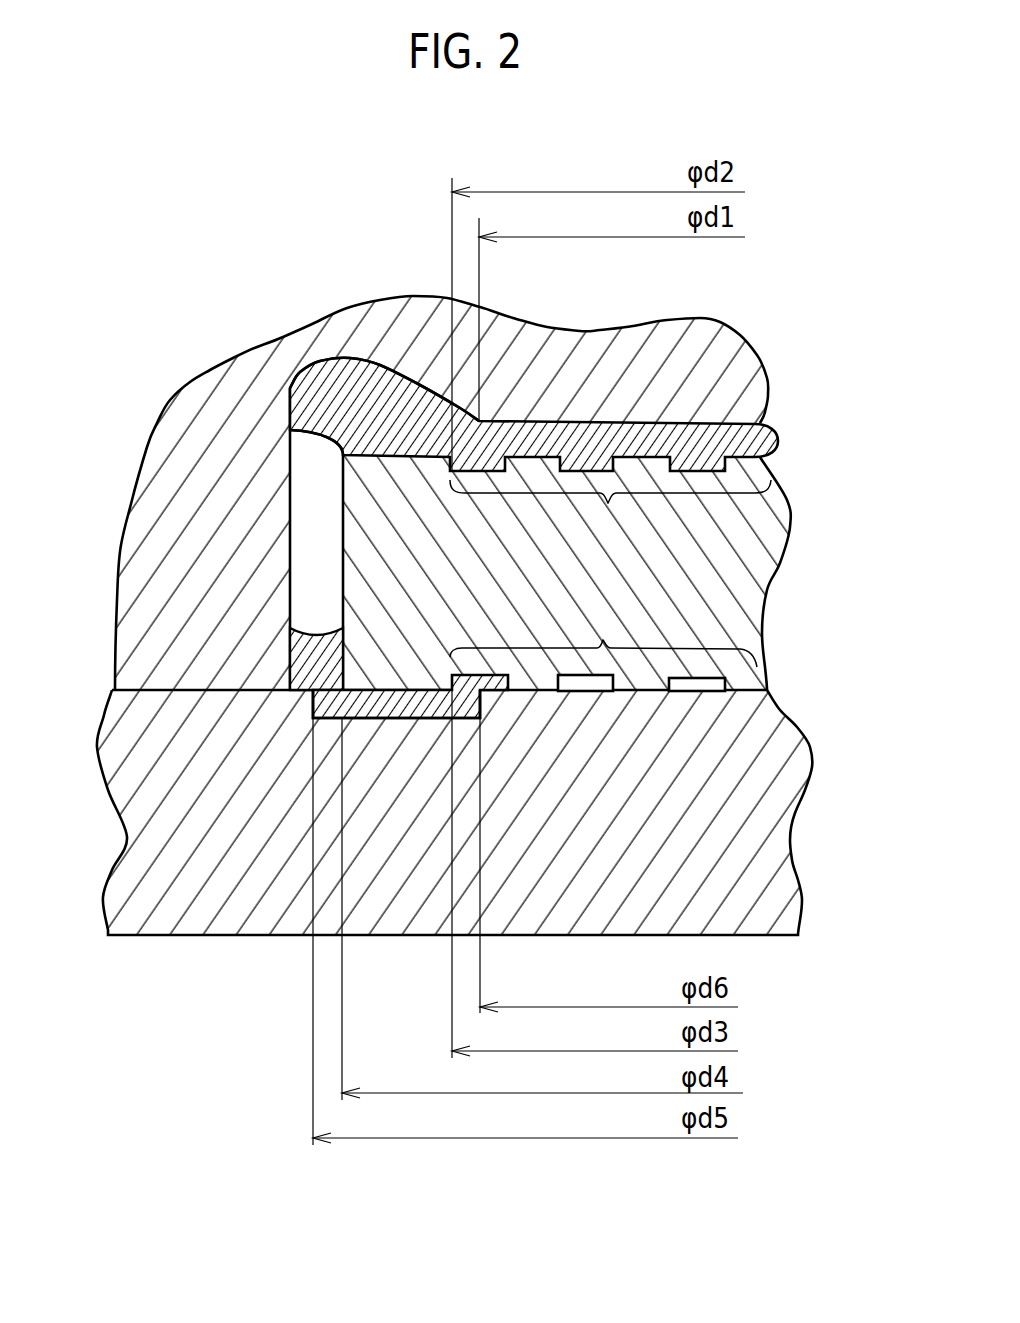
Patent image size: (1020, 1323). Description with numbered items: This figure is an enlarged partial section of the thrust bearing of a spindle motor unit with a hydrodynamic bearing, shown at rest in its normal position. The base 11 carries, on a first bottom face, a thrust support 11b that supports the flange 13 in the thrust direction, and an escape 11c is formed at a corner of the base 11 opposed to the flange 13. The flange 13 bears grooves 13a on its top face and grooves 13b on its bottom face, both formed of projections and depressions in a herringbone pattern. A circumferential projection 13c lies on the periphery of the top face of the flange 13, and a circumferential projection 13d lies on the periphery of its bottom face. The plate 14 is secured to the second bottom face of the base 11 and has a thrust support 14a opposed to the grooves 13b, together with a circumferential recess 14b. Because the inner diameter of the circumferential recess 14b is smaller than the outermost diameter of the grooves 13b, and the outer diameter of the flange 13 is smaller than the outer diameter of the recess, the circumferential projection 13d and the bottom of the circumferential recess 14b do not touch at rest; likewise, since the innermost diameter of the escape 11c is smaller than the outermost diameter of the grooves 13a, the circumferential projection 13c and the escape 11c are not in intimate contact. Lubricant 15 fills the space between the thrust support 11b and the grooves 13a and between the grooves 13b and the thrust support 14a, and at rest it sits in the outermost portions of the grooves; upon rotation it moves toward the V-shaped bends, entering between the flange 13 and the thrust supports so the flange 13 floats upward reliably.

The base 11 is at (280, 358).
The thrust support 11b is at (705, 430).
The escape 11c is at (397, 403).
The flange 13 is at (509, 537).
The grooves 13a is at (608, 503).
The grooves 13b is at (603, 640).
The circumferential projection 13c is at (358, 443).
The circumferential projection 13d is at (418, 692).
The plate 14 is at (210, 887).
The thrust support 14a is at (598, 689).
The circumferential recess 14b is at (345, 715).
The lubricant 15 is at (302, 650).